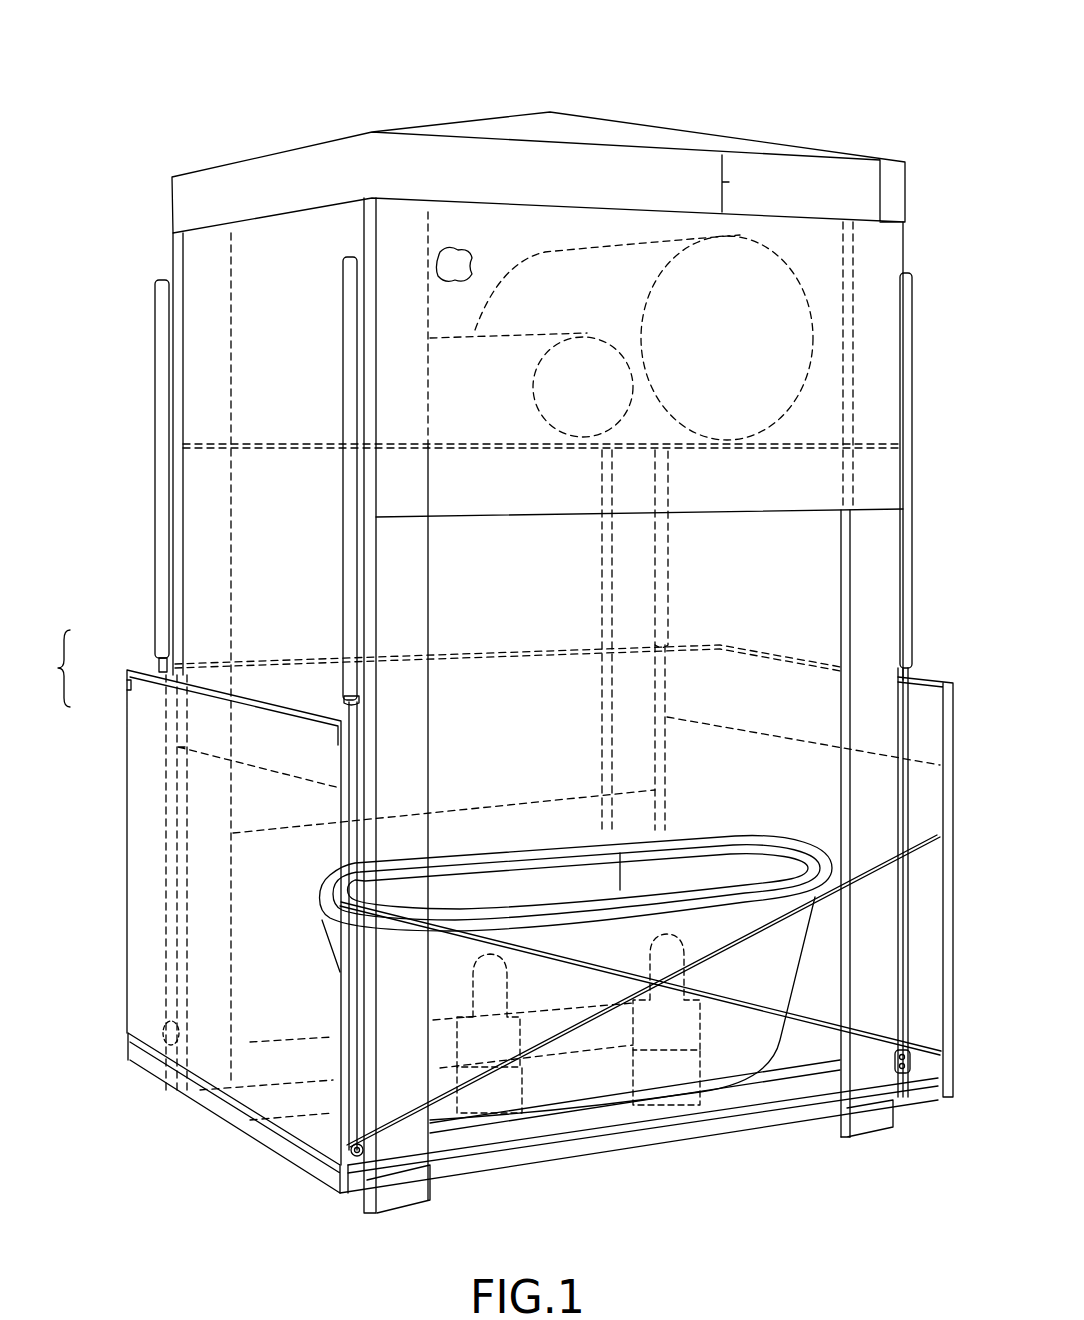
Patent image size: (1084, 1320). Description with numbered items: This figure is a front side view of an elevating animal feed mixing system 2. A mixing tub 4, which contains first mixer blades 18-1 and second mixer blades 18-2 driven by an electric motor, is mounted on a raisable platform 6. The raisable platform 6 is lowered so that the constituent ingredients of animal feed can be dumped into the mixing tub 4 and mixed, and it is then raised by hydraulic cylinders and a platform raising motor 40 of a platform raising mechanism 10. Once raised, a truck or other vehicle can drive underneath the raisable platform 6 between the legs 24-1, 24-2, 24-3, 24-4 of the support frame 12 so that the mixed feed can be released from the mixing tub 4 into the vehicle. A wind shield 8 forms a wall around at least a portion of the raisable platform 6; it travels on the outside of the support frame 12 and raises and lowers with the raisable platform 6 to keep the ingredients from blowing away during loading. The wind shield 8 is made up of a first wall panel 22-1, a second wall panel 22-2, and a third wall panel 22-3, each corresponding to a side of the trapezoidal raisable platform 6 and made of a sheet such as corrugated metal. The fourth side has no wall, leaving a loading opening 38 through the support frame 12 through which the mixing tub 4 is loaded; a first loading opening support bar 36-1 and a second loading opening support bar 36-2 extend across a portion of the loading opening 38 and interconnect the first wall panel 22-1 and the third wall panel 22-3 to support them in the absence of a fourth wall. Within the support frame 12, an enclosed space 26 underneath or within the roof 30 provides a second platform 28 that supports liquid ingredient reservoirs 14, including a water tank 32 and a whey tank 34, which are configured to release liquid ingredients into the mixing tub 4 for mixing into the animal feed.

The elevating animal feed mixing system 2 is at (665, 50).
The mixing tub 4 is at (773, 960).
The raisable platform 6 is at (752, 1117).
The wind shield 8 is at (475, 890).
The platform raising mechanism 10 is at (160, 313).
The support frame 12 is at (912, 176).
The liquid ingredient reservoirs 14 is at (737, 183).
The first mixer blades 18-1 is at (667, 1003).
The second mixer blades 18-2 is at (477, 1053).
The first wall panel 22-1 is at (695, 747).
The second wall panel 22-2 is at (162, 670).
The third wall panel 22-3 is at (146, 703).
The leg 24-1 is at (868, 742).
The leg 24-2 is at (637, 794).
The leg 24-3 is at (203, 837).
The leg 24-4 is at (393, 888).
The enclosed space 26 is at (456, 258).
The second platform 28 is at (833, 482).
The roof 30 is at (527, 118).
The water tank 32 is at (690, 297).
The whey tank 34 is at (601, 353).
The first loading opening support bar 36-1 is at (553, 953).
The second loading opening support bar 36-2 is at (520, 1053).
The loading opening 38 is at (460, 560).
The platform raising motor 40 is at (800, 1058).